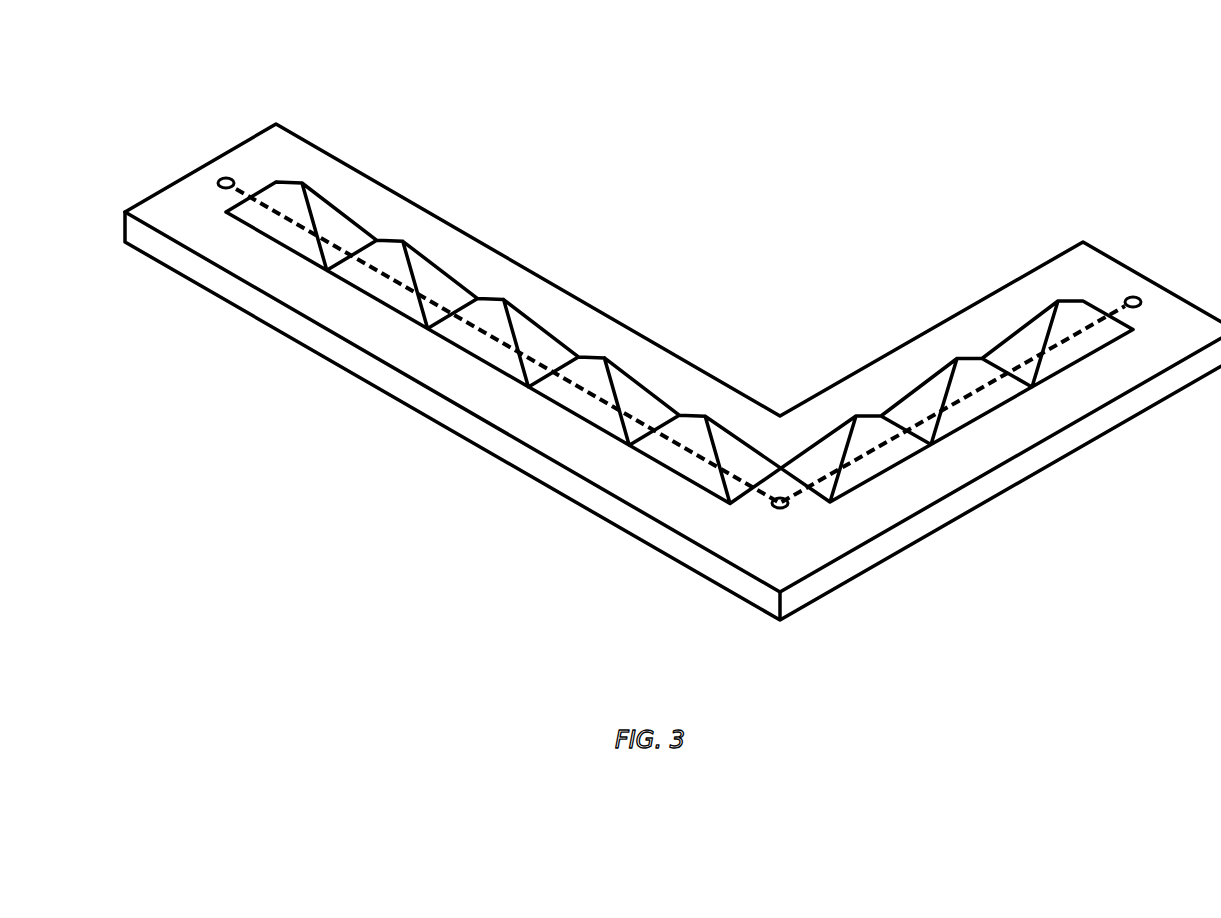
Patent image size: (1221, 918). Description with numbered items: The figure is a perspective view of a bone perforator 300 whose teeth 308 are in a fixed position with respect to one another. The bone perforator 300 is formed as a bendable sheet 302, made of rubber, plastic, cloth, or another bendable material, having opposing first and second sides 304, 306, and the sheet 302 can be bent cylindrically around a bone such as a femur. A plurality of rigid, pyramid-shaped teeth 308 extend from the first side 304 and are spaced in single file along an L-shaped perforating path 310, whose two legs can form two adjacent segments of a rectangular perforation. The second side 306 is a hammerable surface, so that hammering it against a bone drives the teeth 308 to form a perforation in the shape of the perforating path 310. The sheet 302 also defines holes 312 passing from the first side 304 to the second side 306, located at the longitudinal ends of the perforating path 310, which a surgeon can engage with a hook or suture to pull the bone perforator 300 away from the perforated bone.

The bone perforator 300 is at (673, 352).
The bendable sheet 302 is at (673, 352).
The first side 304 is at (632, 485).
The second side 306 is at (673, 447).
The teeth 308 is at (458, 350).
The perforating path 310 is at (645, 420).
The hole 312 is at (1175, 258).